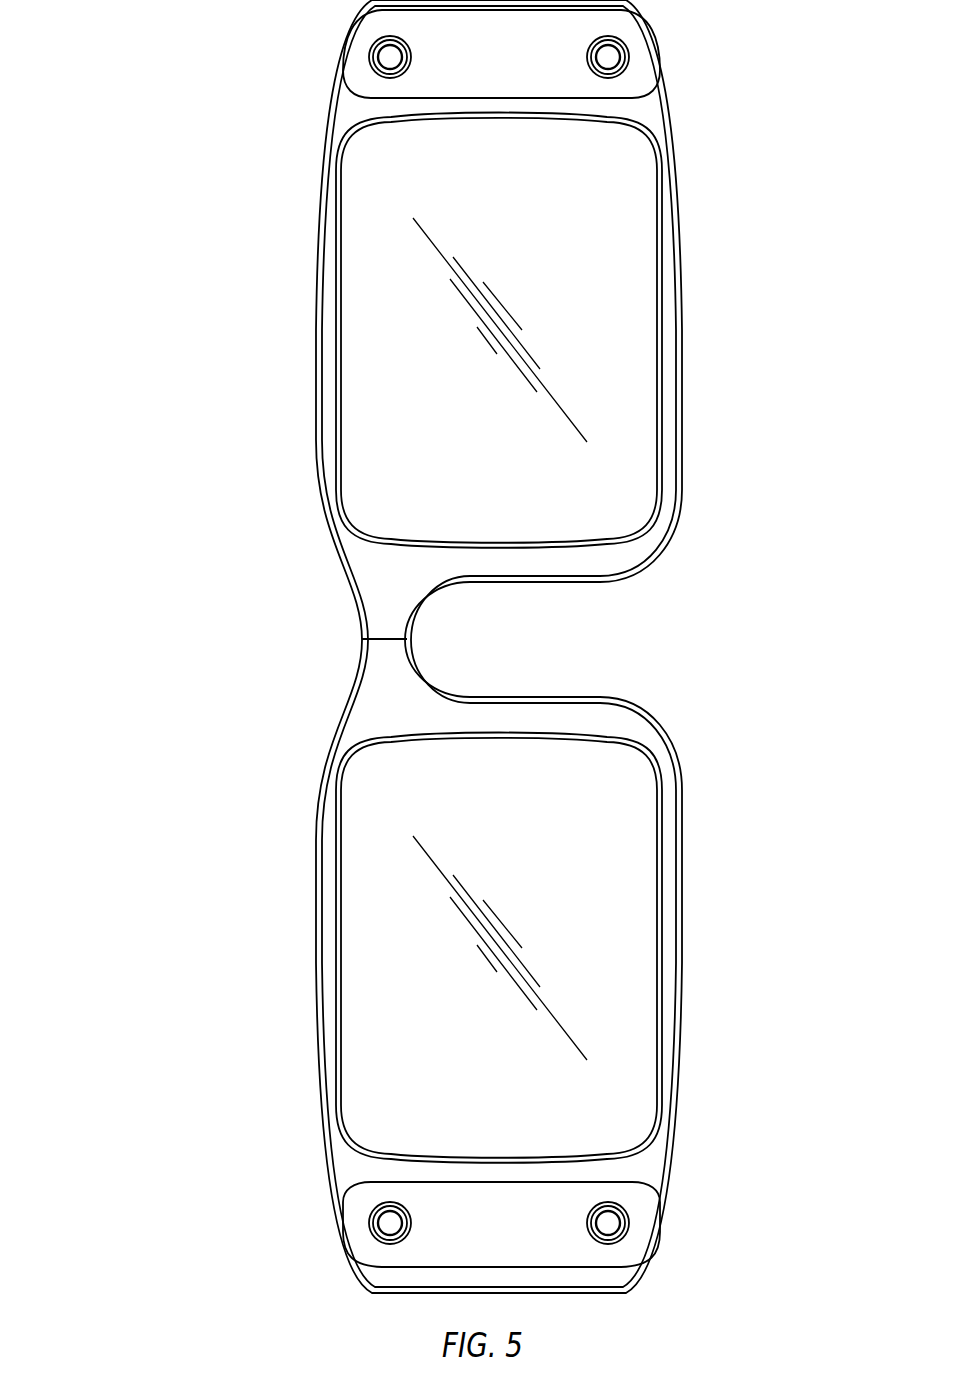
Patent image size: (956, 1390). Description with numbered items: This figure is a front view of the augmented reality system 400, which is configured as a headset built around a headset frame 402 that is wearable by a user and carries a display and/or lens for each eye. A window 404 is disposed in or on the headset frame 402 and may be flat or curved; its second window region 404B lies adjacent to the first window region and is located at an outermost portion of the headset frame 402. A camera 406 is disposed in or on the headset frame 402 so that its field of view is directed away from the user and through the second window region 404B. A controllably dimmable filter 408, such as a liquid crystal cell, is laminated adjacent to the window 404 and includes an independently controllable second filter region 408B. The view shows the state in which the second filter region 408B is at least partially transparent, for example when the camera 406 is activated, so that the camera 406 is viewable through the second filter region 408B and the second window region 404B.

The augmented reality system 400 is at (788, 145).
The headset frame 402 is at (330, 743).
The window 404 is at (352, 1223).
The second window region 404B is at (352, 52).
The camera 406 is at (585, 59).
The controllably dimmable filter 408 is at (358, 638).
The second filter region 408B is at (358, 638).